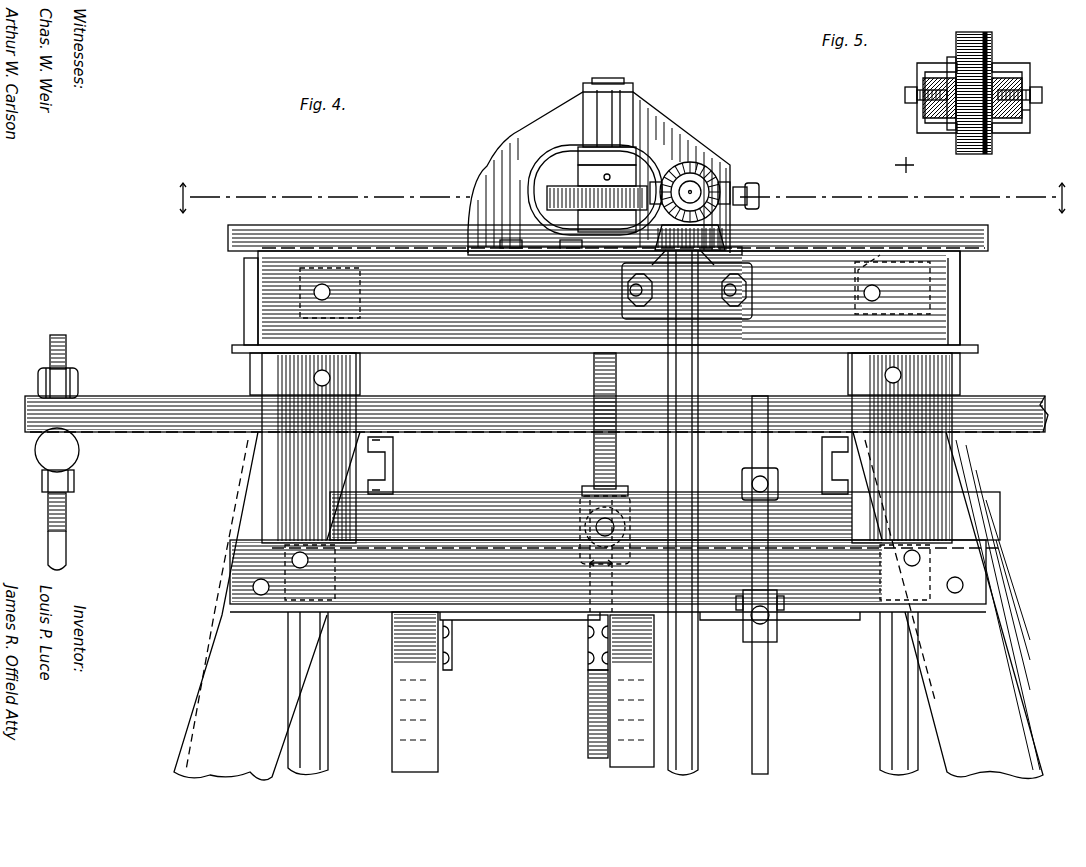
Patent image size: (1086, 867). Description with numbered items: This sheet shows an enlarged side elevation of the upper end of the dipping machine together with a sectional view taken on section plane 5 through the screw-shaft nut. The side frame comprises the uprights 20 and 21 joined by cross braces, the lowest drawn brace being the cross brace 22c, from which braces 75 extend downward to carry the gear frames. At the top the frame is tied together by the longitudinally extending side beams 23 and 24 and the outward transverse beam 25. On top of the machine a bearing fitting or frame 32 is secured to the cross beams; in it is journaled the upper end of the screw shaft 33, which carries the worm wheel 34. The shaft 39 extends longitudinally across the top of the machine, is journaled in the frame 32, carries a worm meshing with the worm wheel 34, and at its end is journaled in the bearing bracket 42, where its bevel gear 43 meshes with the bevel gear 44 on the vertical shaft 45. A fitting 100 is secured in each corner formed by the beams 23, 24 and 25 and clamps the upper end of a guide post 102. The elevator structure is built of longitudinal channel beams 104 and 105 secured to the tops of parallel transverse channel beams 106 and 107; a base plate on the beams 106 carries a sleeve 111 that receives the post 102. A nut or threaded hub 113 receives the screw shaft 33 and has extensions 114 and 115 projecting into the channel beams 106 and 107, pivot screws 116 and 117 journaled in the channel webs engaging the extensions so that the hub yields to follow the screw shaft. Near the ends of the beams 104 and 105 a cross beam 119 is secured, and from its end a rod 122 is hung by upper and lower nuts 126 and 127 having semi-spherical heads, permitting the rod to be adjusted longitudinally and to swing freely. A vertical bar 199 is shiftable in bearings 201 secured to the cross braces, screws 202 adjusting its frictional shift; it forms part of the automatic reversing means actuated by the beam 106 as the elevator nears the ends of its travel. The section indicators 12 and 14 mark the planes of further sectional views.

In FIG. 4, the section line 12 is at (622, 198).
In FIG. 4, the upright 20 is at (222, 697).
In FIG. 4, the upright 21 is at (948, 605).
In FIG. 4, the cross brace 22c is at (962, 574).
In FIG. 4, the longitudinally extending side beam 23 is at (256, 324).
In FIG. 4, the longitudinally extending side beam 24 is at (961, 318).
In FIG. 4, the outward transverse beam 25 is at (608, 259).
In FIG. 4, the bearing fitting or frame 32 is at (480, 185).
In FIG. 4, the screw shaft 33 is at (594, 380).
In FIG. 5, the screw shaft 33 is at (970, 157).
In FIG. 4, the worm wheel 34 is at (547, 196).
In FIG. 4, the shaft 39 is at (683, 165).
In FIG. 4, the bearing bracket 42 is at (622, 298).
In FIG. 4, the bevel gear 43 is at (690, 192).
In FIG. 4, the bevel gear 44 is at (745, 192).
In FIG. 4, the vertical shaft 45 is at (668, 453).
In FIG. 4, the section plane 5 is at (601, 556).
In FIG. 4, the brace 75 is at (645, 706).
In FIG. 4, the fitting 100 is at (256, 286).
In FIG. 4, the guide post 102 is at (322, 730).
In FIG. 4, the longitudinally extending channel beam 104 is at (394, 455).
In FIG. 4, the longitudinally extending channel beam 105 is at (822, 455).
In FIG. 4, the transverse channel beam 106 is at (528, 500).
In FIG. 5, the transverse channel beam 106 is at (917, 73).
In FIG. 5, the transverse channel beam 107 is at (1000, 70).
In FIG. 4, the sleeve 111 is at (290, 464).
In FIG. 4, the nut or threaded hub 113 is at (628, 492).
In FIG. 5, the nut or threaded hub 113 is at (1030, 113).
In FIG. 4, the extension 114 is at (584, 526).
In FIG. 5, the extension 114 is at (922, 115).
In FIG. 5, the extension 115 is at (1030, 80).
In FIG. 4, the pivot screw 116 is at (616, 526).
In FIG. 5, the pivot screw 116 is at (905, 95).
In FIG. 5, the pivot screw 117 is at (1042, 98).
In FIG. 4, the cross beam 119 is at (217, 422).
In FIG. 4, the rod 122 is at (60, 552).
In FIG. 4, the upper nut 126 is at (78, 382).
In FIG. 4, the lower nut 127 is at (80, 462).
In FIG. 4, the vertical bar 199 is at (768, 736).
In FIG. 4, the bearing 201 is at (777, 632).
In FIG. 4, the screw 202 is at (746, 484).
In FIG. 5, the section line 14 is at (905, 155).